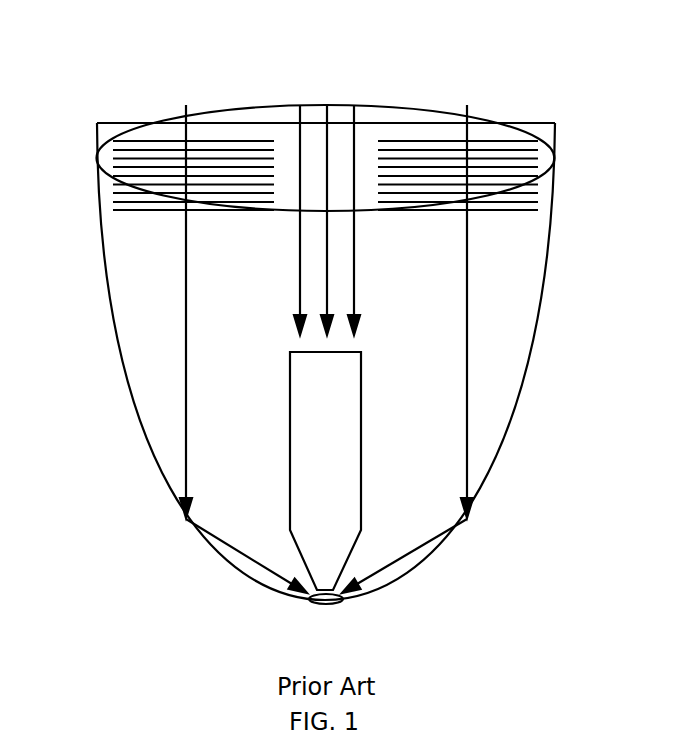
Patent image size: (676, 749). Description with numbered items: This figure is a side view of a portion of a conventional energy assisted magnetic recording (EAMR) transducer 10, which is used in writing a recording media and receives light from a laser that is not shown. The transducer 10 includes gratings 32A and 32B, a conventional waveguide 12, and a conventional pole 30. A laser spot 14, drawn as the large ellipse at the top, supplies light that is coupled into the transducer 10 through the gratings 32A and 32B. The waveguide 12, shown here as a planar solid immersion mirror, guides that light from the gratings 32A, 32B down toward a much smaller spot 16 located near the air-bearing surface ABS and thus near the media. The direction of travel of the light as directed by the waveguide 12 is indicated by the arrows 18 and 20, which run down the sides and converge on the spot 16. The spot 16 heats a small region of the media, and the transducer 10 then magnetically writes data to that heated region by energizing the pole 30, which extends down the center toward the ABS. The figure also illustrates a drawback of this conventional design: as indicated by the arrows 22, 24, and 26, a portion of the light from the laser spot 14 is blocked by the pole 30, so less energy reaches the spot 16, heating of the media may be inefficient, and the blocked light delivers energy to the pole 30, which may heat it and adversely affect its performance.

The energy assisted magnetic recording (EAMR) transducer 10 is at (341, 47).
The waveguide 12 is at (537, 336).
The laser spot 14 is at (432, 110).
The spot 16 is at (330, 604).
The arrow 18 is at (467, 450).
The arrow 20 is at (185, 413).
The arrow 22 is at (354, 272).
The arrow 24 is at (299, 265).
The arrow 26 is at (328, 146).
The pole 30 is at (290, 413).
The grating 32A is at (140, 232).
The grating 32B is at (508, 232).
The air-bearing surface ABS is at (203, 597).